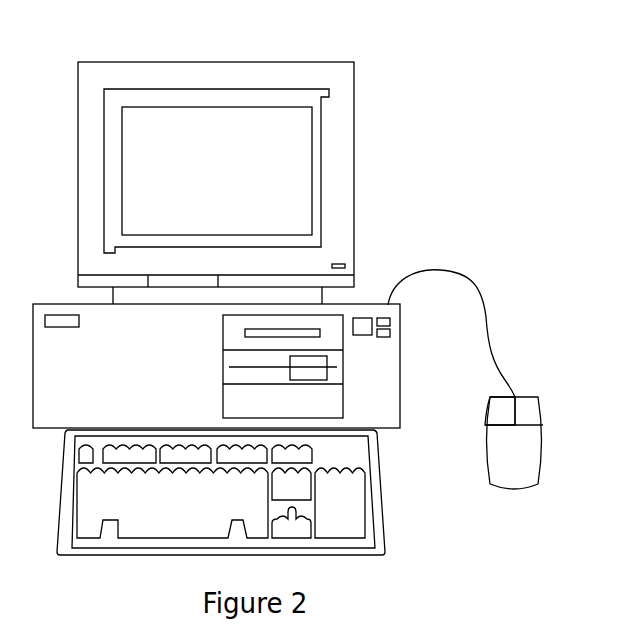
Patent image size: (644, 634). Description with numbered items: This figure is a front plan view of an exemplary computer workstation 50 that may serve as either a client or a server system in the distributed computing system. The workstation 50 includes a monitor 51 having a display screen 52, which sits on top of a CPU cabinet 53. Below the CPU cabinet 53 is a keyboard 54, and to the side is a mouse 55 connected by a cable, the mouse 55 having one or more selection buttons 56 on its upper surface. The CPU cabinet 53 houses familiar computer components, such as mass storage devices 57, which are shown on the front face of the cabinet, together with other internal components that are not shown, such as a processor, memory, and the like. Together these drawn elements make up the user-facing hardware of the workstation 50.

The computer workstation 50 is at (372, 48).
The monitor 51 is at (355, 159).
The display screen 52 is at (208, 168).
The CPU cabinet 53 is at (95, 364).
The keyboard 54 is at (169, 514).
The mouse 55 is at (499, 464).
The selection buttons 56 is at (518, 402).
The mass storage devices 57 is at (333, 323).